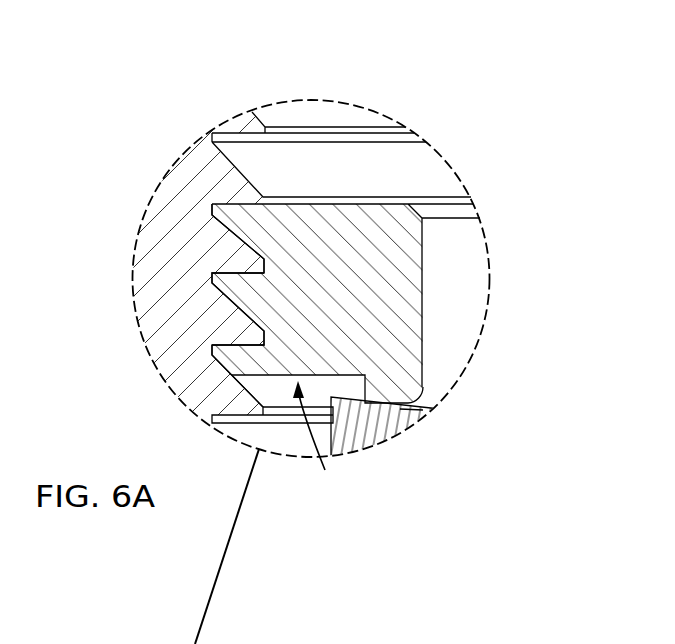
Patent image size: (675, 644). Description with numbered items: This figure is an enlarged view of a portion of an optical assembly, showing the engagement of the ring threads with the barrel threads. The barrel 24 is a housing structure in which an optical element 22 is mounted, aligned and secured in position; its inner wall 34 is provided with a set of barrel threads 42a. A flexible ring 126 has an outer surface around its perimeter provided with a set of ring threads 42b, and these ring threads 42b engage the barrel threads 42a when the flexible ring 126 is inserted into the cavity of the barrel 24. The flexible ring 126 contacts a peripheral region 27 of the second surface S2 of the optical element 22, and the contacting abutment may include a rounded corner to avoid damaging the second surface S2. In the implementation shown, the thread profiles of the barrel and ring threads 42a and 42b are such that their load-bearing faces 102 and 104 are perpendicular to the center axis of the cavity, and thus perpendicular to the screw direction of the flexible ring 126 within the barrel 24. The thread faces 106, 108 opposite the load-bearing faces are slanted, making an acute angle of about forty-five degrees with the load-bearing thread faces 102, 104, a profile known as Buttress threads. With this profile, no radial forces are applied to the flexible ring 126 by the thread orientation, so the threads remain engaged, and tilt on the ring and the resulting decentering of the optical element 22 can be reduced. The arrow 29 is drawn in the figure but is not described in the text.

The inner wall 34 is at (216, 100).
The load-bearing thread face 102 is at (222, 212).
The load-bearing thread face 104 is at (232, 218).
The slanted thread face 106 is at (247, 246).
The slanted thread face 108 is at (250, 250).
The barrel 24 is at (150, 307).
The barrel threads 42a is at (233, 325).
The ring threads 42b is at (243, 357).
The flexible ring 126 is at (422, 238).
The peripheral region 27 is at (366, 403).
The optical element 22 is at (360, 437).
The second surface S2 is at (423, 410).
The flow direction arrow 29 is at (315, 440).